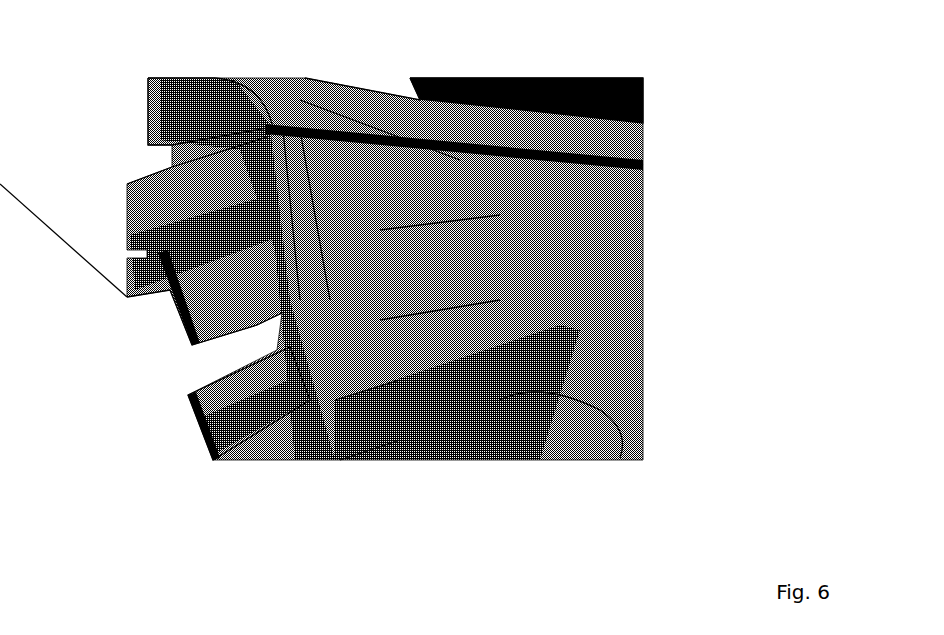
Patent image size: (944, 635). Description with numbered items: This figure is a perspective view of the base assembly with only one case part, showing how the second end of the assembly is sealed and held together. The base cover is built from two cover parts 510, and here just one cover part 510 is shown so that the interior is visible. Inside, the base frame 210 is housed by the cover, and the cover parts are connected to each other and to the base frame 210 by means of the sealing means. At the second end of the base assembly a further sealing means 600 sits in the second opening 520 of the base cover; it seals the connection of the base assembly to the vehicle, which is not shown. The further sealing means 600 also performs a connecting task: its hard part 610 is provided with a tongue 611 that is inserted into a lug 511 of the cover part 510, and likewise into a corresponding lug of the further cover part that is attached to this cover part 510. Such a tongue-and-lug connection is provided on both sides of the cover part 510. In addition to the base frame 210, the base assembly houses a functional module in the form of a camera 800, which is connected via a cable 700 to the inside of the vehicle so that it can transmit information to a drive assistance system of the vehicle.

The base frame 210 is at (207, 479).
The cover part 510 is at (572, 147).
The lug 511 is at (380, 168).
The second opening 520 is at (148, 107).
The further sealing means 600 is at (391, 469).
The hard part 610 is at (362, 458).
The tongue 611 is at (328, 200).
The cable 700 is at (427, 273).
The camera 800 is at (542, 452).